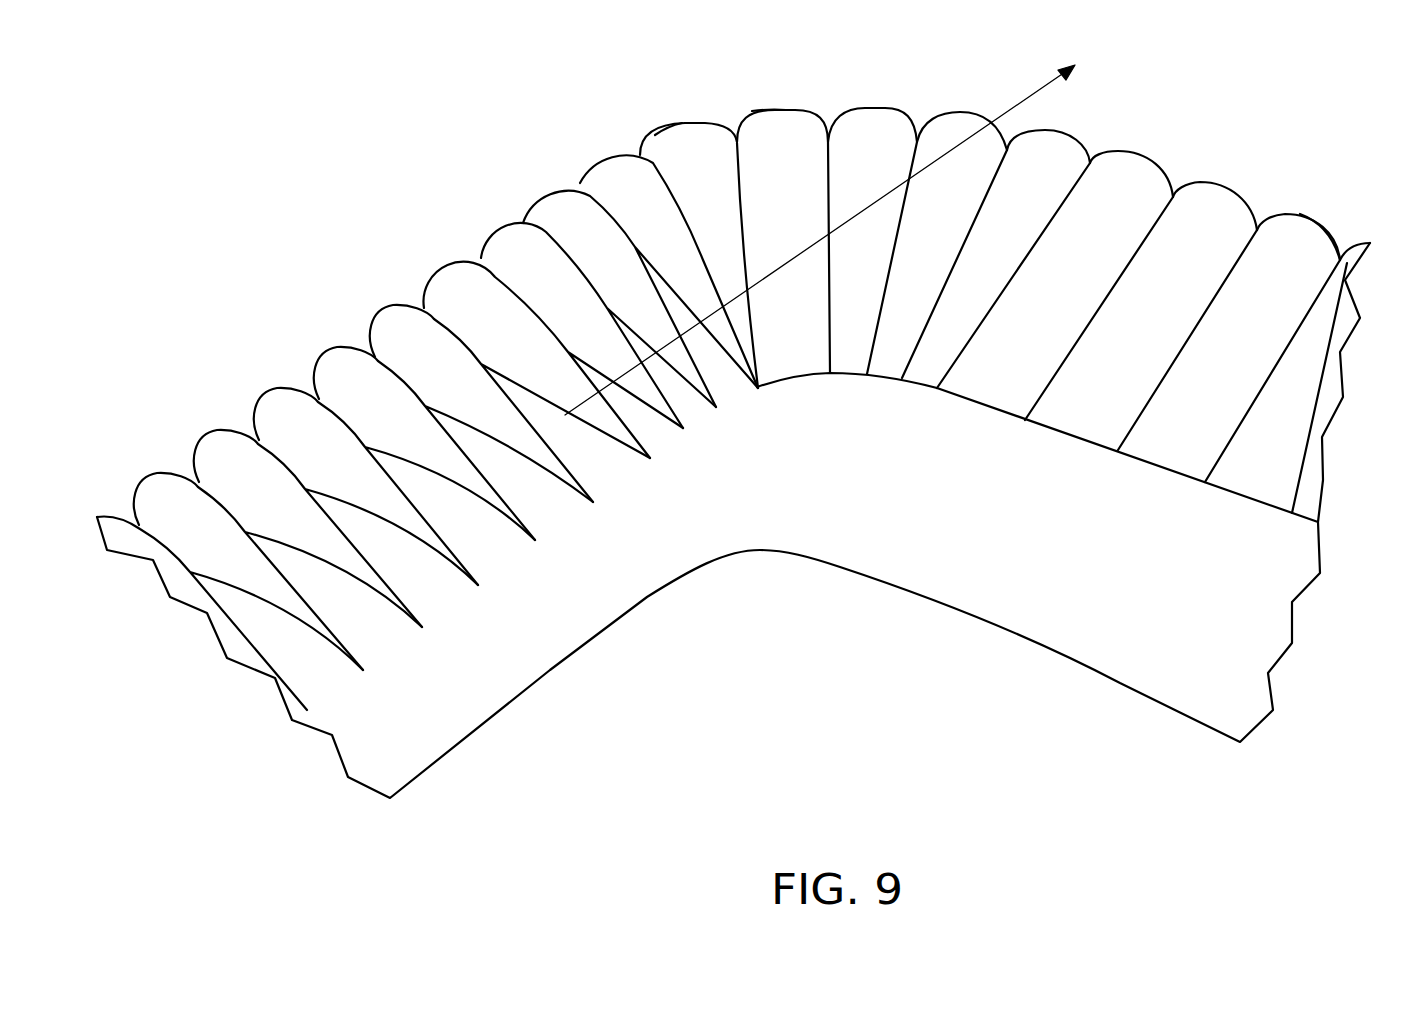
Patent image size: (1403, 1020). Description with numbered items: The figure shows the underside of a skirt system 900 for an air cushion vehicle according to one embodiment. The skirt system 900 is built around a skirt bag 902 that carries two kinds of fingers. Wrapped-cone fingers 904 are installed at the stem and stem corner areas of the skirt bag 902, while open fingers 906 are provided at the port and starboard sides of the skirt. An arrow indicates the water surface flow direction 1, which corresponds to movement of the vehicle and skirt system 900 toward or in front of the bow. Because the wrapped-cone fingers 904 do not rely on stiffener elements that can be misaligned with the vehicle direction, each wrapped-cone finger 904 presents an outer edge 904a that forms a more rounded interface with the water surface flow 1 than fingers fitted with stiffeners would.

The skirt system 900 is at (826, 766).
The skirt bag 902 is at (1125, 648).
The wrapped-cone fingers 904 is at (693, 128).
The outer edge 904a is at (668, 123).
The open fingers 906 is at (484, 240).
The water surface flow direction 1 is at (1024, 100).